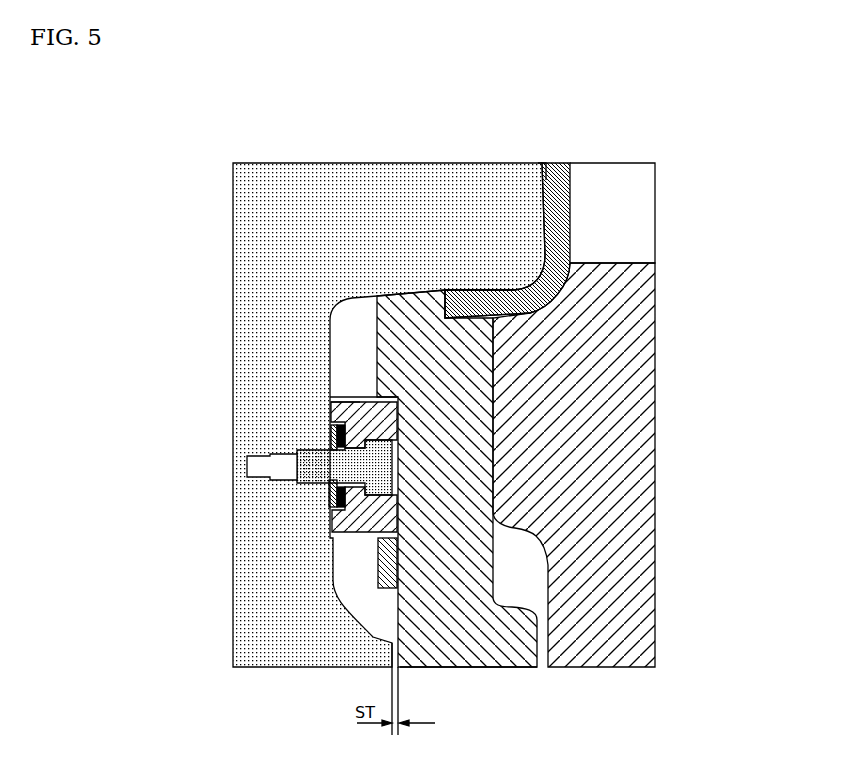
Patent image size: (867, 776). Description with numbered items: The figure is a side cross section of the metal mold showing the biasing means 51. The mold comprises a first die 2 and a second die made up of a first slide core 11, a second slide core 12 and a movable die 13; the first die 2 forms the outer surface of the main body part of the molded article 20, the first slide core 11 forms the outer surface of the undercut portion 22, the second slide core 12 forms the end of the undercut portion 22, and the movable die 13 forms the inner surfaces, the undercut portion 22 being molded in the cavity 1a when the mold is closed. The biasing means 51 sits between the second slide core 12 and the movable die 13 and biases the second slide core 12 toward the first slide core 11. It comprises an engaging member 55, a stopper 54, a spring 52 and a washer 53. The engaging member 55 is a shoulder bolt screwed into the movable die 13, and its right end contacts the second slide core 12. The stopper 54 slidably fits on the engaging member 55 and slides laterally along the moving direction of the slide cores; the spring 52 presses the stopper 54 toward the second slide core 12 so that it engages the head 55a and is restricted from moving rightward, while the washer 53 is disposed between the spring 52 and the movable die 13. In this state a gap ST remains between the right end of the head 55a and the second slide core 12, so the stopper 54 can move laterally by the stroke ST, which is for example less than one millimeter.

The cavity 1a is at (548, 170).
The first die 2 is at (645, 218).
The first slide core 11 is at (642, 453).
The second slide core 12 is at (484, 662).
The movable die 13 is at (242, 281).
The molded article 20 is at (566, 205).
The undercut portion 22 is at (537, 312).
The biasing means 51 is at (283, 456).
The spring 52 is at (330, 497).
The washer 53 is at (330, 433).
The stopper 54 is at (356, 533).
The engaging member 55 is at (310, 468).
The head 55a is at (337, 393).